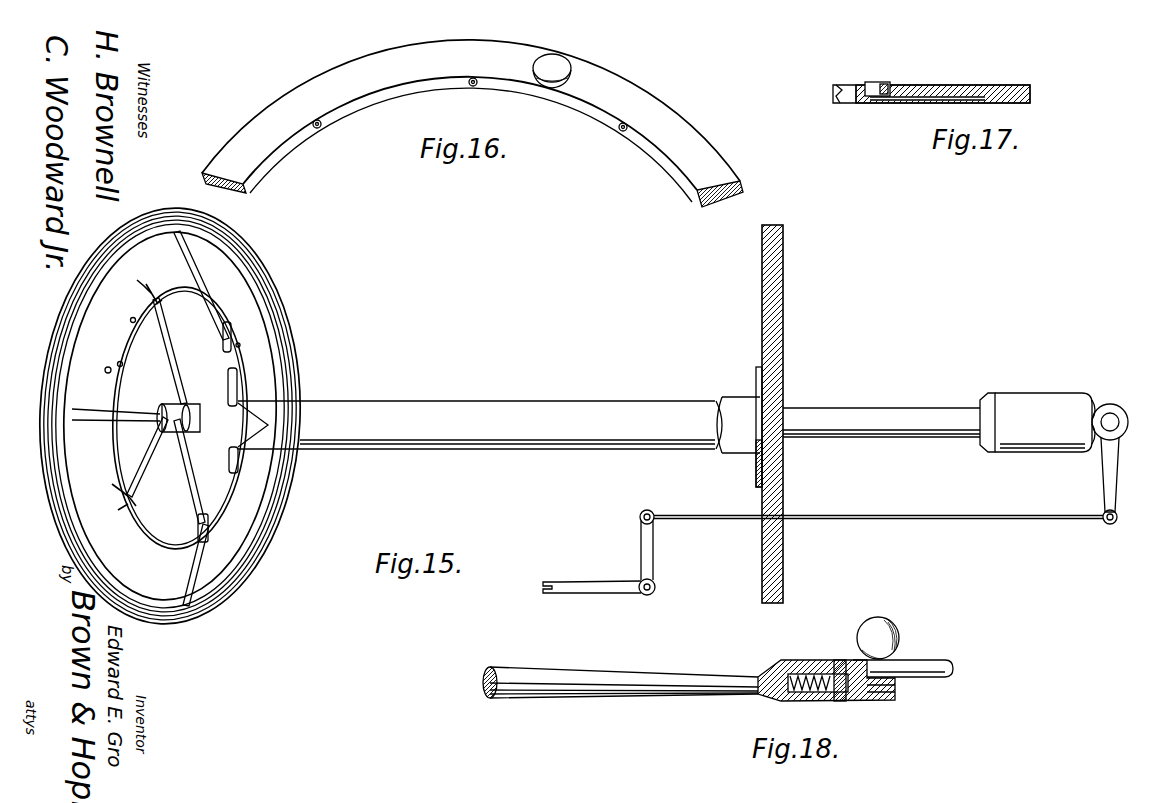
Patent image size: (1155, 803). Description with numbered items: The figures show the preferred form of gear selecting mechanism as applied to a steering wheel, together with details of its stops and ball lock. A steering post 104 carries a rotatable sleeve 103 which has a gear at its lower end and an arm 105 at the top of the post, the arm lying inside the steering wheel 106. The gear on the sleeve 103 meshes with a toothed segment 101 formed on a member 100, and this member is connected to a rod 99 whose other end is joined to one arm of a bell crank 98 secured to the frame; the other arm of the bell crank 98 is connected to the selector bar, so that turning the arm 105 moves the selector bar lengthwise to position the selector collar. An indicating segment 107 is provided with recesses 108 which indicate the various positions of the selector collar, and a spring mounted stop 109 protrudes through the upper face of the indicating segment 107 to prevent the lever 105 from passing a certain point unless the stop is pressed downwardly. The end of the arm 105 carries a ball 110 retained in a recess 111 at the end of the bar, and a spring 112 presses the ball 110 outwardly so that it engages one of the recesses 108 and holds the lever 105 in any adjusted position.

In FIG. 15, the bell crank 98 is at (589, 584).
In FIG. 15, the rod 99 is at (870, 507).
In FIG. 15, the member 100 is at (1104, 485).
In FIG. 15, the toothed segment 101 is at (1096, 405).
In FIG. 15, the sleeve 103 is at (900, 400).
In FIG. 15, the steering post 104 is at (545, 412).
In FIG. 15, the arm 105 is at (155, 337).
In FIG. 18, the arm 105 is at (626, 680).
In FIG. 15, the steering wheel 106 is at (88, 268).
In FIG. 15, the indicating segment 107 is at (115, 402).
In FIG. 16, the indicating segment 107 is at (372, 66).
In FIG. 17, the indicating segment 107 is at (1004, 86).
In FIG. 18, the indicating segment 107 is at (880, 688).
In FIG. 15, the recesses 108 is at (110, 372).
In FIG. 16, the recesses 108 is at (321, 128).
In FIG. 18, the recesses 108 is at (880, 702).
In FIG. 16, the spring mounted stop 109 is at (548, 80).
In FIG. 17, the spring mounted stop 109 is at (878, 85).
In FIG. 18, the spring mounted stop 109 is at (878, 638).
In FIG. 18, the ball 110 is at (815, 702).
In FIG. 18, the recess 111 is at (815, 668).
In FIG. 18, the spring 112 is at (781, 666).